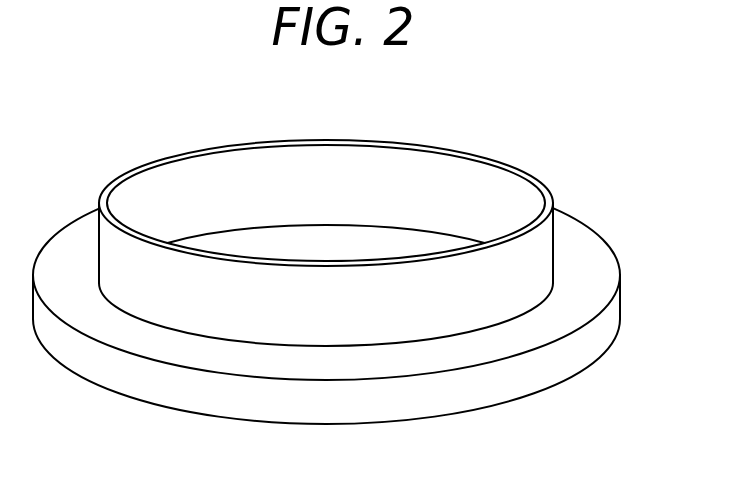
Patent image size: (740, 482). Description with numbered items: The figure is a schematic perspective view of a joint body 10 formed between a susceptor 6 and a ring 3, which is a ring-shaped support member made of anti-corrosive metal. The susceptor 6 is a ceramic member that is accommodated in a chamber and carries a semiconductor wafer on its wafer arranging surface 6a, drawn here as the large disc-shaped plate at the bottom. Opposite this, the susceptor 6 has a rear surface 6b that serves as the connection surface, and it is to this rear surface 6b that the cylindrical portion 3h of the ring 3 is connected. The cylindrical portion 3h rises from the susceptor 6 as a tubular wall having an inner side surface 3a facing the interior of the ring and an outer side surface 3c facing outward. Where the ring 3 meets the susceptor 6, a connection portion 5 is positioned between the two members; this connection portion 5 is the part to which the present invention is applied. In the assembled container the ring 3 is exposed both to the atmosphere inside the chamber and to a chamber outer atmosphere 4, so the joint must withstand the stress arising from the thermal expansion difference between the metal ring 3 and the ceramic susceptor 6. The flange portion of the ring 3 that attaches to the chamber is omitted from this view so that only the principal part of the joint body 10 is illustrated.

The joint body 10 is at (577, 202).
The ring 3 is at (542, 173).
The inner side surface 3a is at (407, 190).
The cylindrical portion 3h is at (497, 244).
The outer side surface 3c is at (372, 318).
The chamber outer atmosphere 4 is at (307, 250).
The connection portion 5 is at (561, 266).
The susceptor 6 is at (613, 318).
The wafer arranging surface 6a is at (515, 400).
The rear surface 6b is at (603, 275).